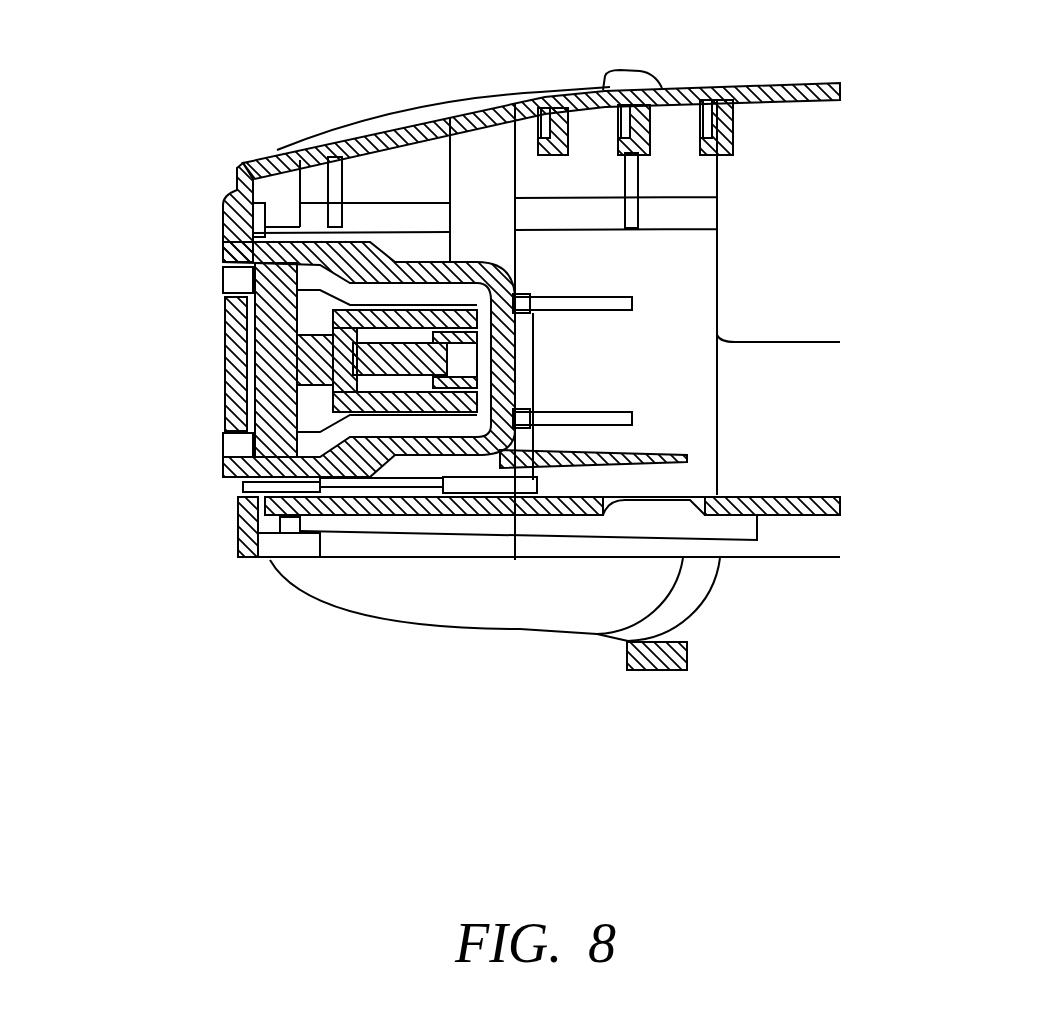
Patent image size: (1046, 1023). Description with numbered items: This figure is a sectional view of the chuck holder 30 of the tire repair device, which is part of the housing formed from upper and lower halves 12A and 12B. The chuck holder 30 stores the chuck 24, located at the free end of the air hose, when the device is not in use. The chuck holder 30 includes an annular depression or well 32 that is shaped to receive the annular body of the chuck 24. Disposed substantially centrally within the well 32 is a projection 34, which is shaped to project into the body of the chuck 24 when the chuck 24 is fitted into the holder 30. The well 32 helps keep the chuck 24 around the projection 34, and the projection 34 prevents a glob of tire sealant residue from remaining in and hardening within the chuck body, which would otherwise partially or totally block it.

The chuck holder 30 is at (176, 184).
The upper half of housing 12A is at (280, 155).
The lower half of housing 12B is at (305, 537).
The chuck 24 is at (232, 333).
The well 32 is at (495, 272).
The projection 34 is at (463, 372).